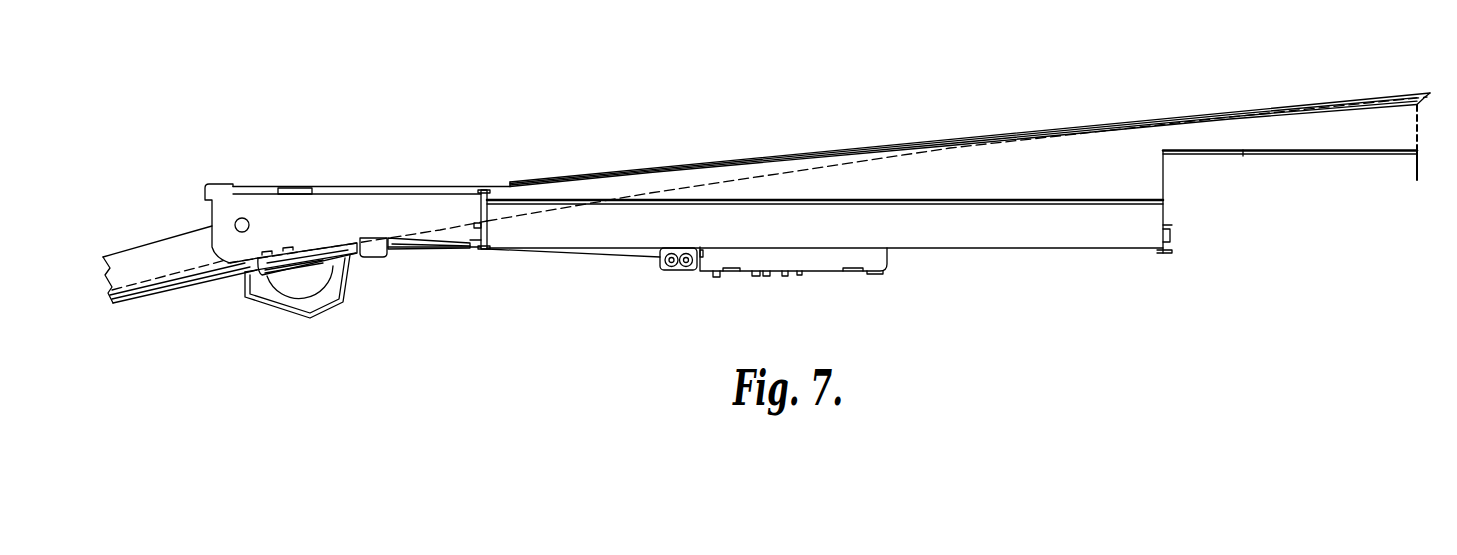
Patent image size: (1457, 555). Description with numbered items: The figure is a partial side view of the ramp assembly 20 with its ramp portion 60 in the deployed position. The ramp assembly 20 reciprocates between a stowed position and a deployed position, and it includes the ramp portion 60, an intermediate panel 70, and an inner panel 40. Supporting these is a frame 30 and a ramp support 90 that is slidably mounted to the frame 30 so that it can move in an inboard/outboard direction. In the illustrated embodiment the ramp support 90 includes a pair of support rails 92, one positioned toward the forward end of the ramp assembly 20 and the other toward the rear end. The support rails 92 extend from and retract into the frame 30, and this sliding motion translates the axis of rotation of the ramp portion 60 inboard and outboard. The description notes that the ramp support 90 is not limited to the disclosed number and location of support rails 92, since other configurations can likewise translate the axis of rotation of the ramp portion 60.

The ramp assembly 20 is at (1227, 246).
The frame 30 is at (1077, 250).
The inner panel 40 is at (1288, 108).
The ramp portion 60 is at (171, 293).
The intermediate panel 70 is at (738, 180).
The ramp support 90 is at (412, 257).
The support rails 92 is at (293, 230).